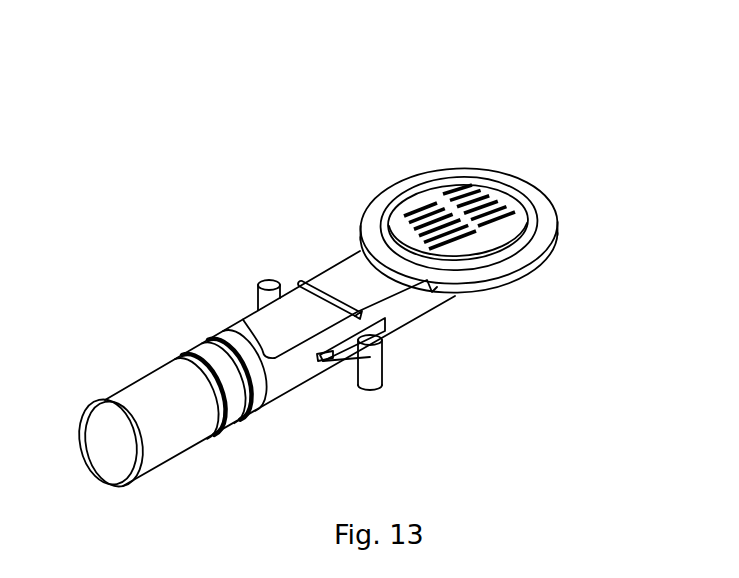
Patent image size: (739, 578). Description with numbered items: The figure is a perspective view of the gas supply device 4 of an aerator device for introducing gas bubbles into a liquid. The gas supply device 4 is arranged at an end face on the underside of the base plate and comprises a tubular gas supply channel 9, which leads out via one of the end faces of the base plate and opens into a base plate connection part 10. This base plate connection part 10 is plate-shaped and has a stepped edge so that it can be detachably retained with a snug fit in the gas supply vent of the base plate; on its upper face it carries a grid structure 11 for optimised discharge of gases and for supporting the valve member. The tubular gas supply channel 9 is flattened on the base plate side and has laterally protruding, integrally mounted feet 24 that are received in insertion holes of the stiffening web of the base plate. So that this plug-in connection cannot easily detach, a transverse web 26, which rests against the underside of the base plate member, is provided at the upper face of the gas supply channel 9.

The gas supply device 4 is at (139, 279).
The tubular gas supply channel 9 is at (157, 385).
The base plate connection part 10 is at (503, 282).
The grid structure 11 is at (497, 216).
The feet 24 is at (372, 372).
The transverse web 26 is at (310, 283).